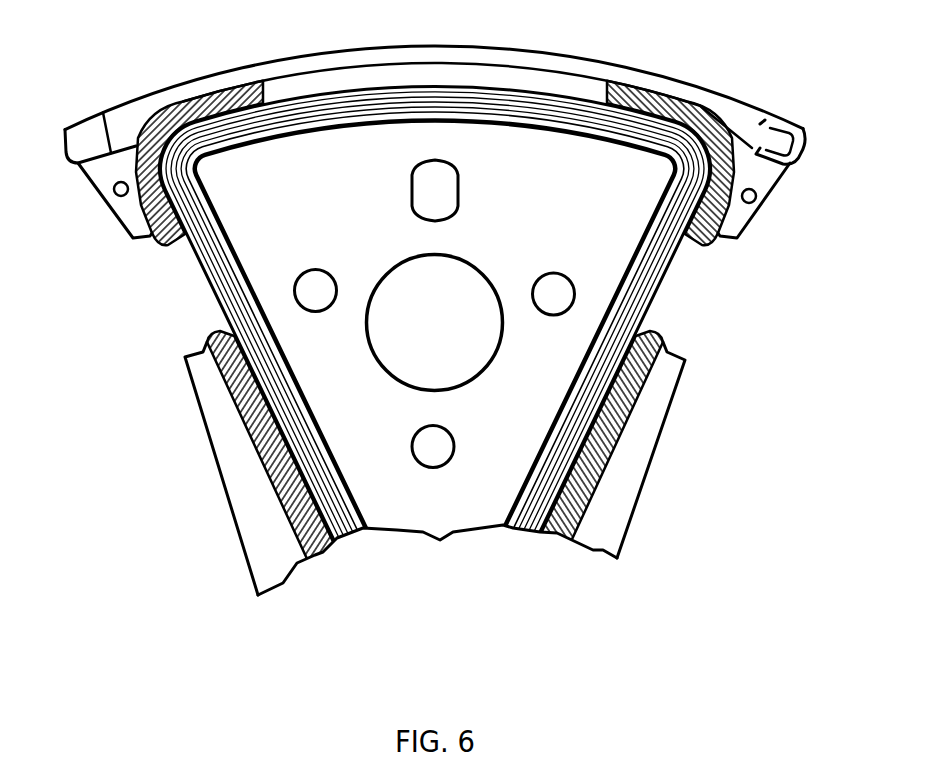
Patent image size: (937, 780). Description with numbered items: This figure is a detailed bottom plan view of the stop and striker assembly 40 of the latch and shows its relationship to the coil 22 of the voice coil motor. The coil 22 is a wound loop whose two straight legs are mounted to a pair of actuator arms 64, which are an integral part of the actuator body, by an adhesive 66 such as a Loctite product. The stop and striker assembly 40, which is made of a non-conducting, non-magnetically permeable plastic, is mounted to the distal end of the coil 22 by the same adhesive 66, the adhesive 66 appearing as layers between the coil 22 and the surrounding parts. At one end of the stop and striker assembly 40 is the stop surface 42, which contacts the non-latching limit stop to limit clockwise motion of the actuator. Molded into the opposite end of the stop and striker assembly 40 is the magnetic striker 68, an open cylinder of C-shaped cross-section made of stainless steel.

The coil 22 is at (208, 287).
The stop and striker assembly 40 is at (555, 64).
The stop surface 42 is at (65, 143).
The actuator arms 64 is at (240, 508).
The adhesive 66 is at (178, 108).
The magnetic striker 68 is at (807, 143).